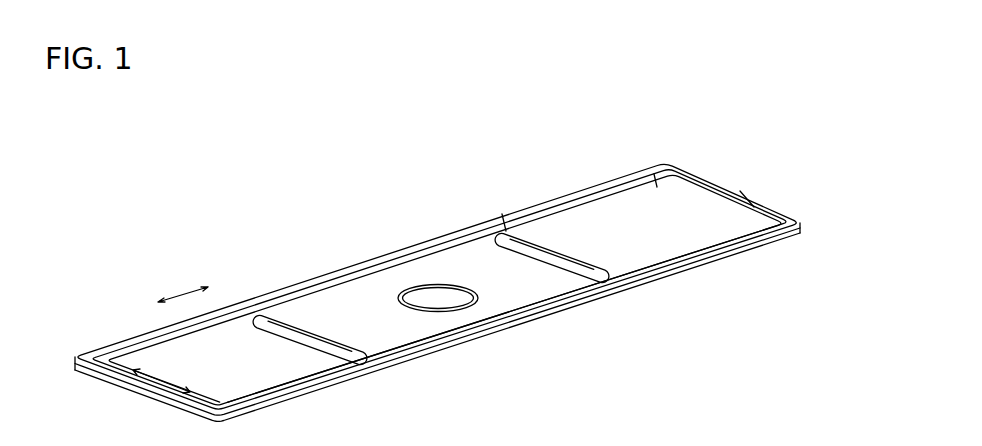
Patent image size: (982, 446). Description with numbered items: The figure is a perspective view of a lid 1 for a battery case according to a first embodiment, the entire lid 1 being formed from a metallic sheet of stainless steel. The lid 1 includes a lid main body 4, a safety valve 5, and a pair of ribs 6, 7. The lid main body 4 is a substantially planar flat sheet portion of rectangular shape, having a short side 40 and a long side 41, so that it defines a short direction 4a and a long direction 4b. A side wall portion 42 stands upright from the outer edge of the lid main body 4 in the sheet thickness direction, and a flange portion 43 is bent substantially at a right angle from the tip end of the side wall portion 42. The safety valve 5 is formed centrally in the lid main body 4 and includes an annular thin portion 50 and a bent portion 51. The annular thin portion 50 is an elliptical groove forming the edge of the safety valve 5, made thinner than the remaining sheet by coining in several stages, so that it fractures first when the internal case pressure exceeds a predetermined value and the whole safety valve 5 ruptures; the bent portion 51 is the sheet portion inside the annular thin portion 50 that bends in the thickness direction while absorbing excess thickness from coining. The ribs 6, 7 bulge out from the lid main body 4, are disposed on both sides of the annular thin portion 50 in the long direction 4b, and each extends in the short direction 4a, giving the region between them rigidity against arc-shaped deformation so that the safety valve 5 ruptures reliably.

The lid 1 is at (439, 255).
The lid main body 4 is at (652, 250).
The short direction 4a is at (167, 378).
The long direction 4b is at (190, 288).
The short side 40 is at (750, 201).
The long side 41 is at (498, 216).
The side wall portion 42 is at (716, 202).
The flange portion 43 is at (660, 166).
The safety valve 5 is at (485, 358).
The annular thin portion 50 is at (447, 312).
The bent portion 51 is at (428, 305).
The rib 6 is at (556, 249).
The rib 7 is at (316, 323).